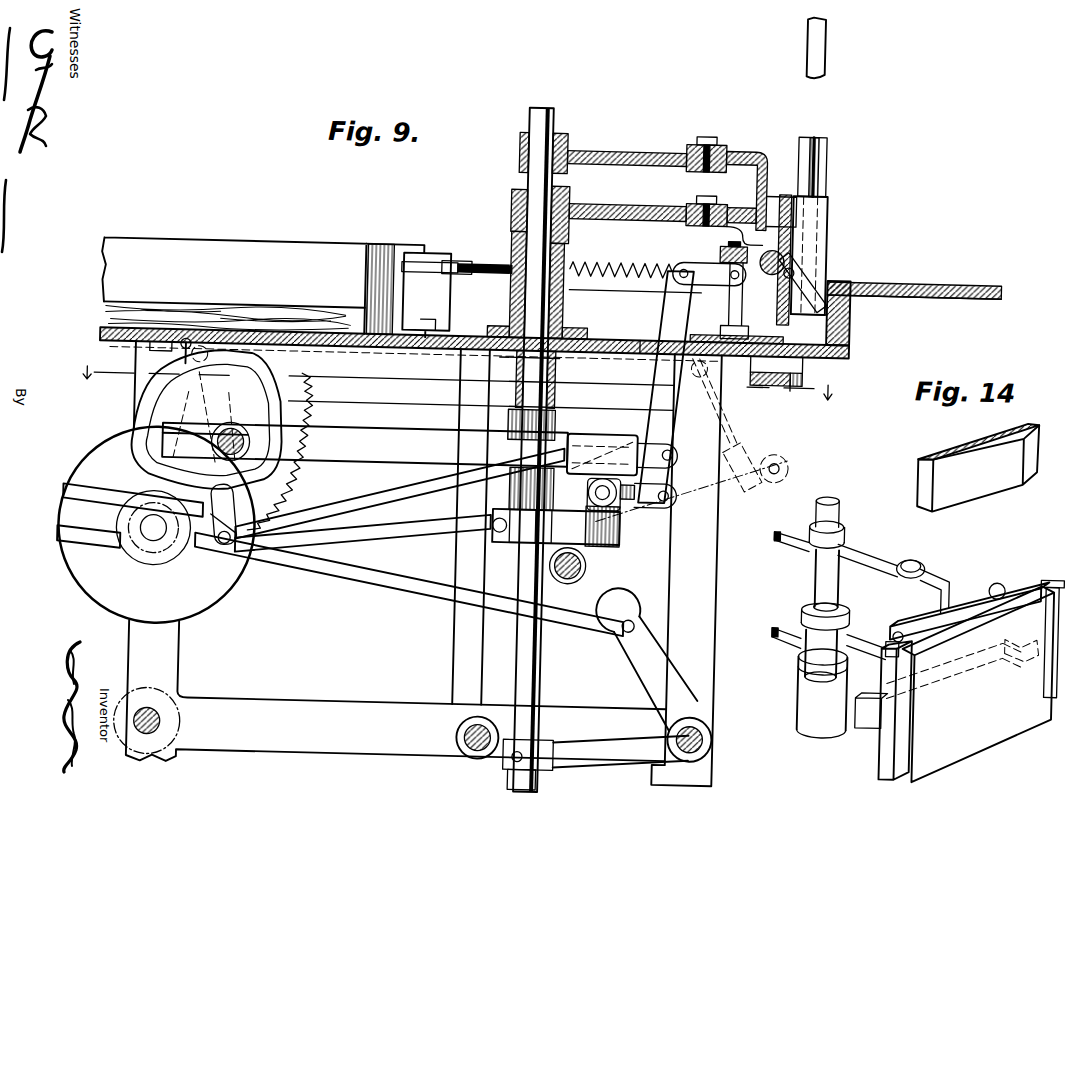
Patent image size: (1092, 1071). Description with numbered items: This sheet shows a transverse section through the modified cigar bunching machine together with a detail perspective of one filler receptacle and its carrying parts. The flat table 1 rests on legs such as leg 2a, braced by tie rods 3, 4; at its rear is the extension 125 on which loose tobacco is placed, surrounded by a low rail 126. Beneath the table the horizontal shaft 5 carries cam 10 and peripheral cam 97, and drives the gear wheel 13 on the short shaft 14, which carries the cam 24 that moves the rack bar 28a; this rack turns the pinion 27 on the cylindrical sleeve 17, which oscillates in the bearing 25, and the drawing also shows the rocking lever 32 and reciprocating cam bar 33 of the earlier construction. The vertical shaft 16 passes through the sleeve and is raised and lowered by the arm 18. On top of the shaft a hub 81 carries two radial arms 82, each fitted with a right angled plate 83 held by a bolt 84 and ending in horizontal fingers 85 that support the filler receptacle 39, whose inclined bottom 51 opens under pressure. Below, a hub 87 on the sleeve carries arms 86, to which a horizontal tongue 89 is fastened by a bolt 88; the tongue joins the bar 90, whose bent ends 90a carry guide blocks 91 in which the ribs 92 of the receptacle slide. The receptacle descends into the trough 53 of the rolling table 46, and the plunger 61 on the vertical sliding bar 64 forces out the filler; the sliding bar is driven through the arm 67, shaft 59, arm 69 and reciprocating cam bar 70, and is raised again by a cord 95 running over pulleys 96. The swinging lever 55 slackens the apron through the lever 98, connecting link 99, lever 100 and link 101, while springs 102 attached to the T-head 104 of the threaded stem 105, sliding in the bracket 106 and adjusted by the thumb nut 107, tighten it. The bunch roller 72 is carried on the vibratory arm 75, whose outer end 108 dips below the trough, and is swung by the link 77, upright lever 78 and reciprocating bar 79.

In FIG. 9, the table 1 is at (656, 336).
In FIG. 9, the leg 2a is at (716, 568).
In FIG. 9, the tie rod 3 is at (485, 722).
In FIG. 9, the tie rod 4 is at (714, 738).
In FIG. 9, the horizontal shaft 5 is at (165, 542).
In FIG. 9, the cam 10 is at (462, 382).
In FIG. 9, the gear wheel 13 is at (300, 488).
In FIG. 9, the short shaft 14 is at (248, 446).
In FIG. 9, the vertical shaft 16 is at (532, 126).
In FIG. 14, the vertical shaft 16 is at (820, 576).
In FIG. 9, the cylindrical sleeve 17 is at (563, 245).
In FIG. 14, the cylindrical sleeve 17 is at (812, 654).
In FIG. 9, the arm 18 is at (595, 761).
In FIG. 9, the cam 24 is at (157, 418).
In FIG. 9, the bearing 25 is at (510, 312).
In FIG. 14, the bearing 25 is at (806, 705).
In FIG. 9, the pinion 27 is at (565, 440).
In FIG. 9, the rack bar 28a is at (410, 450).
In FIG. 9, the rocking lever 32 is at (646, 659).
In FIG. 9, the reciprocating cam bar 33 is at (419, 594).
In FIG. 9, the filler receptacle 39 is at (826, 262).
In FIG. 14, the filler receptacle 39 is at (976, 684).
In FIG. 9, the rolling table 46 is at (914, 303).
In FIG. 9, the inclined bottom 51 is at (815, 287).
In FIG. 9, the trough 53 is at (850, 330).
In FIG. 9, the swinging lever 55 is at (716, 246).
In FIG. 9, the shaft 59 is at (592, 564).
In FIG. 9, the plunger 61 is at (820, 42).
In FIG. 14, the plunger 61 is at (995, 493).
In FIG. 9, the vertical sliding bar 64 is at (920, 276).
In FIG. 9, the arm 67 is at (748, 497).
In FIG. 9, the arm 69 is at (548, 546).
In FIG. 9, the reciprocating cam bar 70 is at (416, 532).
In FIG. 9, the bunch roller 72 is at (812, 247).
In FIG. 9, the vibratory arm 75 is at (811, 378).
In FIG. 9, the link 77 is at (616, 280).
In FIG. 9, the upright lever 78 is at (471, 527).
In FIG. 9, the reciprocating bar 79 is at (314, 512).
In FIG. 9, the hub 81 is at (527, 153).
In FIG. 14, the hub 81 is at (818, 513).
In FIG. 9, the radial arm 82 is at (604, 150).
In FIG. 14, the radial arm 82 is at (779, 530).
In FIG. 9, the right angled plate 83 is at (758, 147).
In FIG. 14, the right angled plate 83 is at (956, 570).
In FIG. 9, the bolt 84 is at (722, 127).
In FIG. 14, the bolt 84 is at (925, 555).
In FIG. 14, the horizontal fingers 85 is at (998, 576).
In FIG. 9, the arm 86 is at (663, 203).
In FIG. 14, the arm 86 is at (786, 623).
In FIG. 9, the hub 87 is at (508, 212).
In FIG. 14, the hub 87 is at (855, 612).
In FIG. 9, the bolt 88 is at (726, 190).
In FIG. 9, the horizontal tongue 89 is at (728, 222).
In FIG. 14, the horizontal tongue 89 is at (892, 650).
In FIG. 9, the bar 90 is at (777, 216).
In FIG. 14, the bar 90 is at (960, 683).
In FIG. 14, the bar ends 90a is at (862, 710).
In FIG. 9, the guide block 91 is at (824, 148).
In FIG. 14, the guide block 91 is at (1070, 679).
In FIG. 14, the rib 92 is at (1058, 570).
In FIG. 9, the cord 95 is at (414, 358).
In FIG. 9, the pulley 96 is at (196, 345).
In FIG. 9, the peripheral cam 97 is at (146, 570).
In FIG. 9, the lever 98 is at (234, 513).
In FIG. 9, the connecting link 99 is at (397, 505).
In FIG. 9, the lever 100 is at (665, 376).
In FIG. 9, the link 101 is at (710, 268).
In FIG. 9, the spring 102 is at (582, 272).
In FIG. 9, the T-head 104 is at (490, 265).
In FIG. 9, the threaded stem 105 is at (462, 263).
In FIG. 9, the bracket 106 is at (428, 320).
In FIG. 9, the thumb nut 107 is at (426, 264).
In FIG. 9, the outer end 108 is at (766, 381).
In FIG. 9, the extension 125 is at (122, 312).
In FIG. 9, the low rail 126 is at (296, 250).